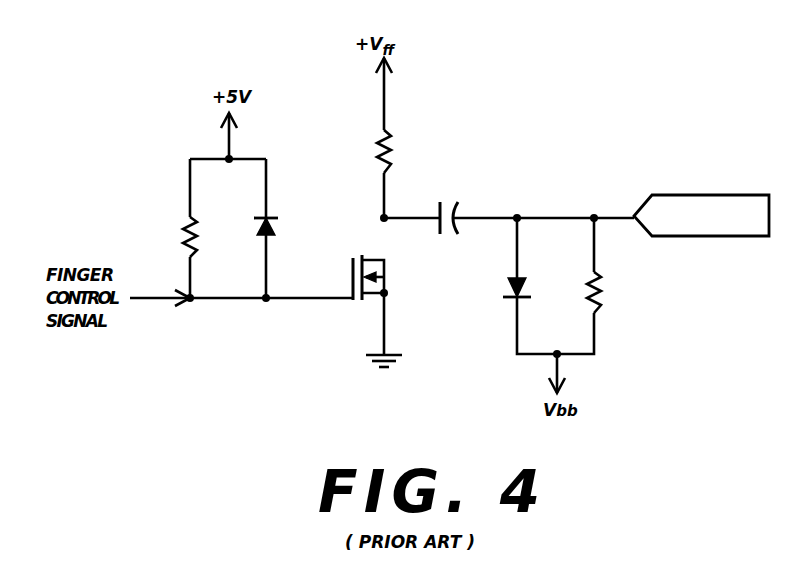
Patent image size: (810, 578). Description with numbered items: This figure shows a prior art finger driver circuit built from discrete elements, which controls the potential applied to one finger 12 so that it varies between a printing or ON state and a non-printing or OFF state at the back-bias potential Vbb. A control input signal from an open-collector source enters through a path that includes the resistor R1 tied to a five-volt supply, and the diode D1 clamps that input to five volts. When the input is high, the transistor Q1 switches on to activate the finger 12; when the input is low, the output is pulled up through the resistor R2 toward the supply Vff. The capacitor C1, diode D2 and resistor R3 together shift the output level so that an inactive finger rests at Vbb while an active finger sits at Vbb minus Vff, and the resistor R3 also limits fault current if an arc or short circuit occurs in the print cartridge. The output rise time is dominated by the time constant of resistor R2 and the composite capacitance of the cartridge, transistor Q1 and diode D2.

The resistor R1 is at (183, 240).
The diode D1 is at (278, 240).
The transistor Q1 is at (357, 306).
The resistor R2 is at (380, 156).
The capacitor C1 is at (448, 196).
The diode D2 is at (506, 301).
The resistor R3 is at (600, 306).
The finger 12 is at (677, 195).